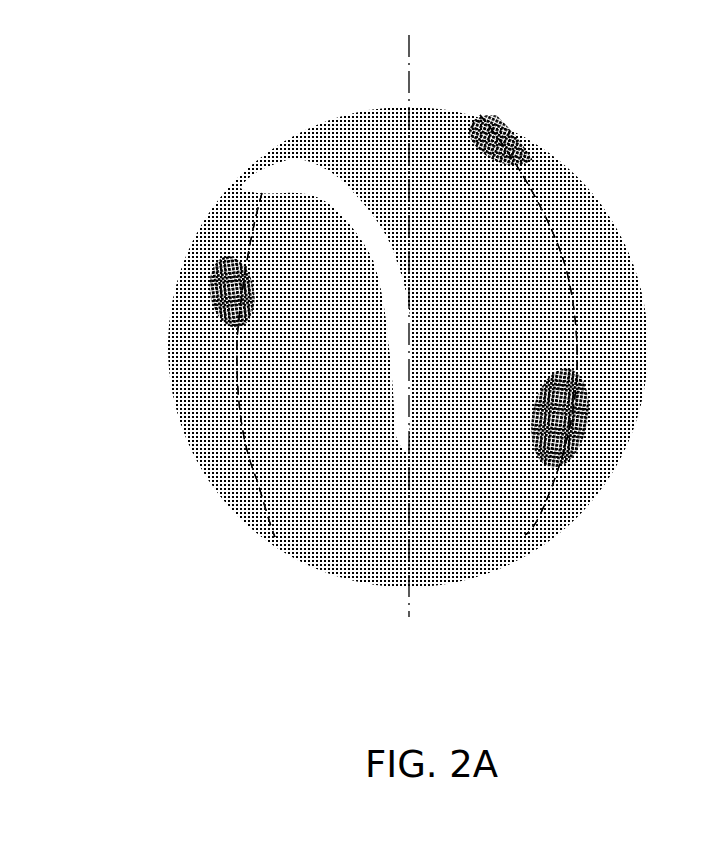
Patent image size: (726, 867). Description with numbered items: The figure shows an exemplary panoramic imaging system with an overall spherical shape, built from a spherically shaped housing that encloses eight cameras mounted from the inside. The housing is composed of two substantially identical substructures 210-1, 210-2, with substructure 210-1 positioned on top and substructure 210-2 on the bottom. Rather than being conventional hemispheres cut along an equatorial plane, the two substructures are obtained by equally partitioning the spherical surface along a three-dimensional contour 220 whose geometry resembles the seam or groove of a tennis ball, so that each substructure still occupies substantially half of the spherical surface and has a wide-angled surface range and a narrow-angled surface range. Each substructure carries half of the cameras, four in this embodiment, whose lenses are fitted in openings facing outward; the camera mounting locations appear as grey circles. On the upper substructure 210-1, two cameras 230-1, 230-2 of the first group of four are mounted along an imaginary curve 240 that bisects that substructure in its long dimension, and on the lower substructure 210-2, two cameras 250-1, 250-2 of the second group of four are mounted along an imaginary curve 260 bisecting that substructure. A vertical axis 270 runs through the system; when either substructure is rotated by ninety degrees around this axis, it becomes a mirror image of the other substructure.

The substructure 210-1 is at (585, 220).
The substructure 210-2 is at (205, 340).
The three-dimensional contour 220 is at (300, 179).
The camera 230-1 is at (582, 412).
The camera 230-2 is at (523, 150).
The imaginary curve 240 is at (568, 290).
The camera 250-1 is at (218, 308).
The camera 250-2 is at (273, 540).
The imaginary curve 260 is at (240, 372).
The vertical axis 270 is at (455, 113).